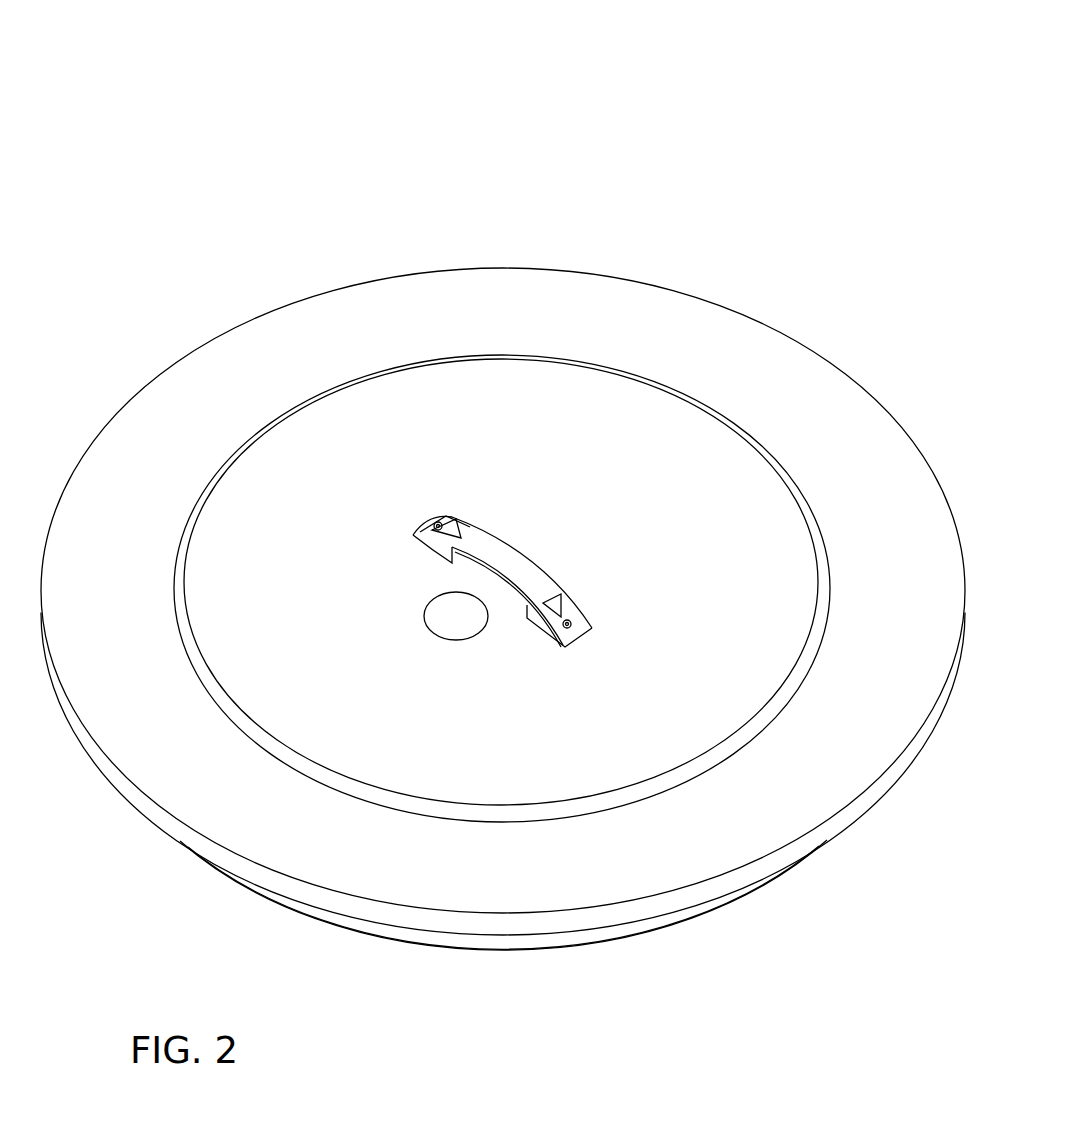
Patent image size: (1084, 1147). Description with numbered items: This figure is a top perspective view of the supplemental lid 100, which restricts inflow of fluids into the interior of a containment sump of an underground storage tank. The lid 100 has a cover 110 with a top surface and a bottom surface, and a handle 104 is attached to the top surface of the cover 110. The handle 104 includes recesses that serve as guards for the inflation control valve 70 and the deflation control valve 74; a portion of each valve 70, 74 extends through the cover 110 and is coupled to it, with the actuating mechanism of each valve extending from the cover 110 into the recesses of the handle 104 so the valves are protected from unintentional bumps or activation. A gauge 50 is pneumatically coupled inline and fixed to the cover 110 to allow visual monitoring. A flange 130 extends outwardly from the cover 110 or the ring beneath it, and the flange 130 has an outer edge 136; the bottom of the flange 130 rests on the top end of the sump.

The supplemental lid 100 is at (643, 207).
The cover 110 is at (310, 445).
The flange 130 is at (148, 740).
The outer edge 136 is at (778, 855).
The gauge 50 is at (455, 623).
The handle 104 is at (512, 560).
The deflation control valve 74 is at (435, 525).
The inflation control valve 70 is at (573, 627).